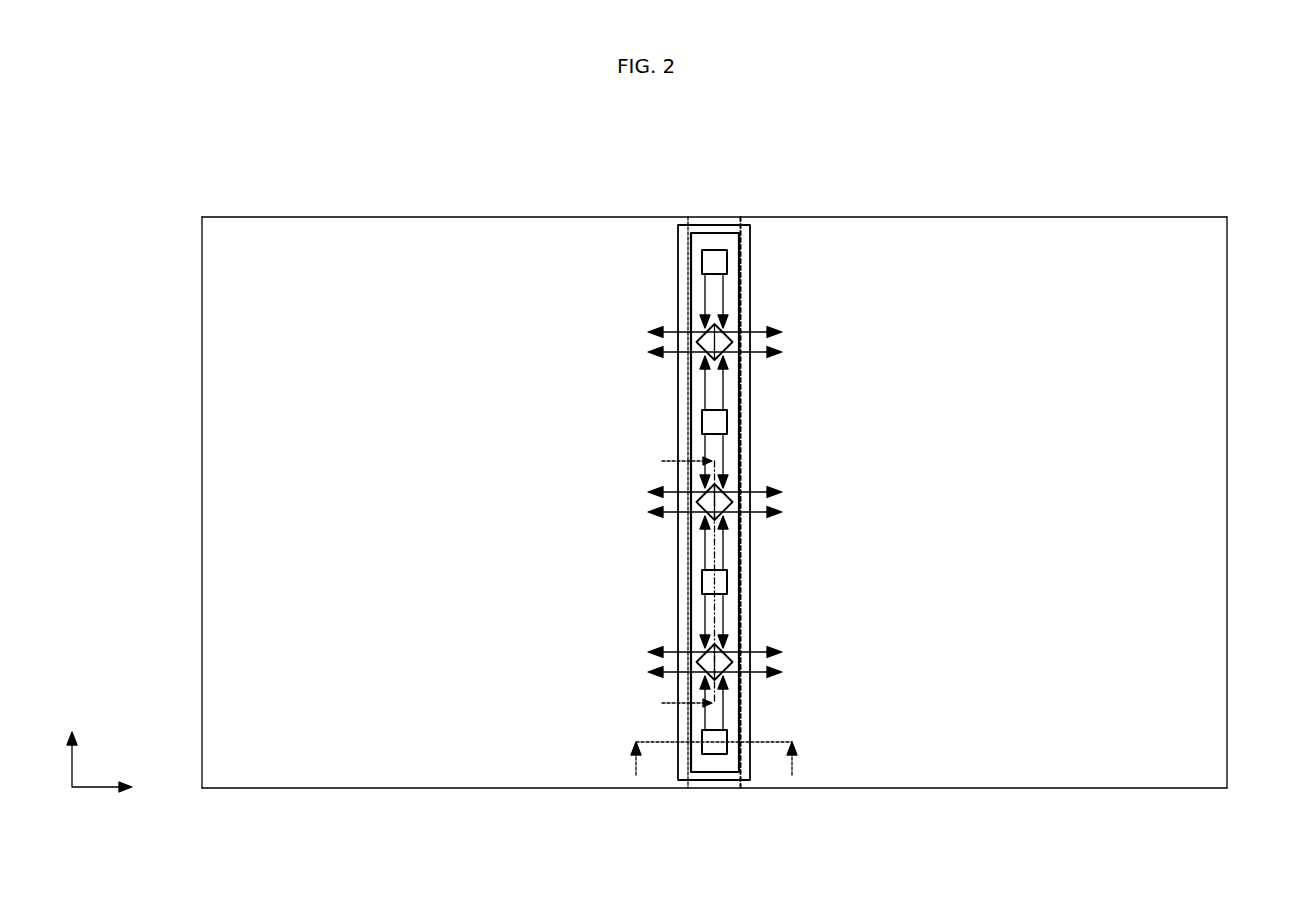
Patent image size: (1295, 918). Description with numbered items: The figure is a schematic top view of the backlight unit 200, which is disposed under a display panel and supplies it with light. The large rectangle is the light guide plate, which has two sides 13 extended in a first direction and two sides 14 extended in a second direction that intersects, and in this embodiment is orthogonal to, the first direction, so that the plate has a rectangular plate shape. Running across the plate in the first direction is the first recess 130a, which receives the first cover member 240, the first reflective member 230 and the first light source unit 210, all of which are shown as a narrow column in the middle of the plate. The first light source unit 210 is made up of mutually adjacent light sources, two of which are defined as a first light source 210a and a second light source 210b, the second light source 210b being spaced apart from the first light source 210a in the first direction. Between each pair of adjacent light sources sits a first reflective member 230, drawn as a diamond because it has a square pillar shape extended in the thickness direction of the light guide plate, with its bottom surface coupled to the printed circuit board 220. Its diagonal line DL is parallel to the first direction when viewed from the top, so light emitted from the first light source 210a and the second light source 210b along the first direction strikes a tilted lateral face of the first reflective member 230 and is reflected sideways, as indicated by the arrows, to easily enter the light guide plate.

The backlight unit 200 is at (1176, 156).
The sides 13 is at (202, 373).
The sides 14 is at (978, 217).
The first recess 130a is at (750, 265).
The printed circuit board 220 is at (678, 597).
The first cover member 240 is at (690, 545).
The first light source unit 210 is at (751, 502).
The first light source 210a is at (776, 725).
The second light source 210b is at (727, 578).
The first reflective member 230 is at (697, 662).
The diagonal line DL is at (722, 341).